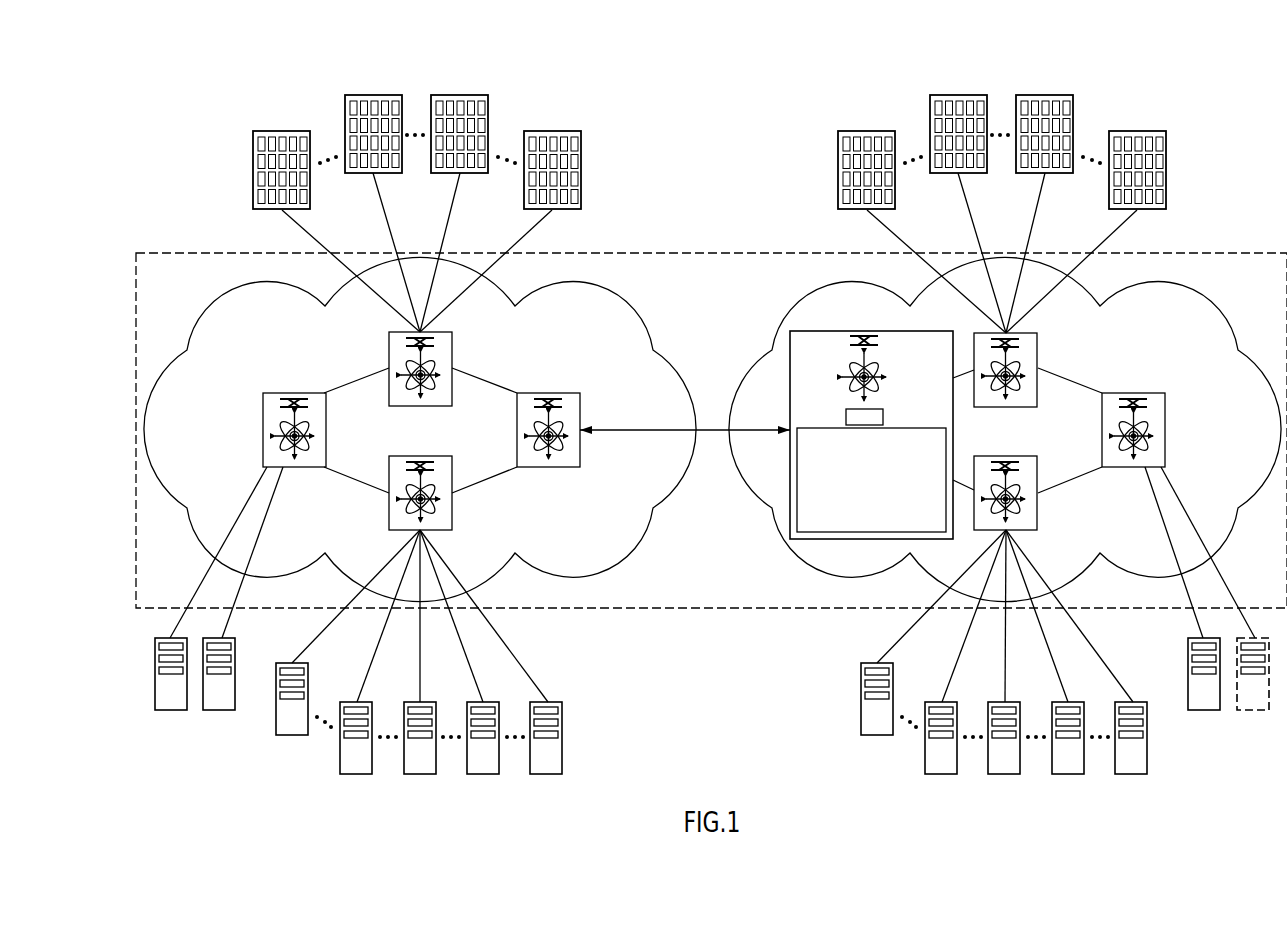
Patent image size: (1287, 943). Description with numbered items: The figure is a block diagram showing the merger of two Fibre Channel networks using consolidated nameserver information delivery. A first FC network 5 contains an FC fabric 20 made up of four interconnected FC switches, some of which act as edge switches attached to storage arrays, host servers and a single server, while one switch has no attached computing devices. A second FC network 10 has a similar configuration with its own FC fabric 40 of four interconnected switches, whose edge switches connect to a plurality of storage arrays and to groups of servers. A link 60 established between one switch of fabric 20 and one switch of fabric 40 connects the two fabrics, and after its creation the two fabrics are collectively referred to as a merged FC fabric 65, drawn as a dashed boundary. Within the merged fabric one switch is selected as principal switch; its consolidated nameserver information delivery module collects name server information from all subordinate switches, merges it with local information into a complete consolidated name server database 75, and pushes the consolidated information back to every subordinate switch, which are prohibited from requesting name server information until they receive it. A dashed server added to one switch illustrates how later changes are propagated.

The first FC network 5 is at (1196, 233).
The second FC network 10 is at (200, 233).
The FC fabric 20 is at (1232, 329).
The FC fabric 40 is at (647, 329).
The link 60 is at (713, 428).
The merged FC fabric 65 is at (718, 253).
The consolidated name server database 75 is at (845, 417).